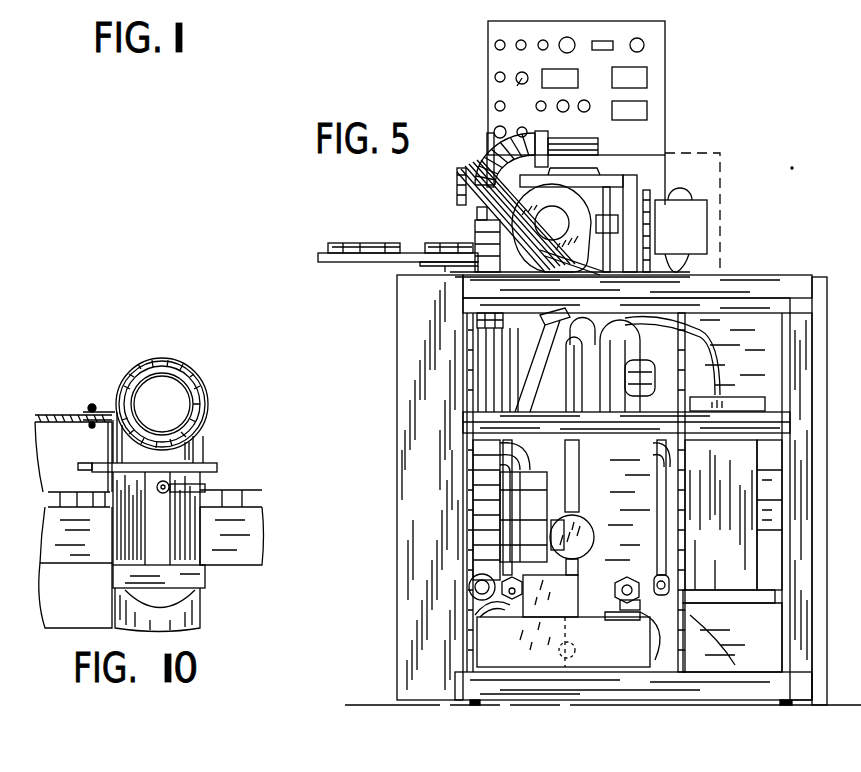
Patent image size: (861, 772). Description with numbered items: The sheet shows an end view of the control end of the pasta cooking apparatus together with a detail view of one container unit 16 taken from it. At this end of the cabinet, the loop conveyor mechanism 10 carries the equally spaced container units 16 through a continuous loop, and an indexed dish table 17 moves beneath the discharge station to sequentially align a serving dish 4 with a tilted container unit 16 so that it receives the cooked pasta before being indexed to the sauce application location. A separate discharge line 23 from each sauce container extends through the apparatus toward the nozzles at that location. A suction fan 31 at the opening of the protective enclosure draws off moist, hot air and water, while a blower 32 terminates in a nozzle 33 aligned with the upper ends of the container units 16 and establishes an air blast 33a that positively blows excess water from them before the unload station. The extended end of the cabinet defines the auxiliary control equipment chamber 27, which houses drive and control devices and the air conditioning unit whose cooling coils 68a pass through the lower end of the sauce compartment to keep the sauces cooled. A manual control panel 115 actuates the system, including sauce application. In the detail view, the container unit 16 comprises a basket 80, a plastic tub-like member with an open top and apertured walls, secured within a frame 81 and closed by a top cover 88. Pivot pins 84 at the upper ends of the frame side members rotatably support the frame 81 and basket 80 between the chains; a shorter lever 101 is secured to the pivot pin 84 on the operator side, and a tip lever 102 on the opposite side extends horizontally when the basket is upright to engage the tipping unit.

In FIG. 5, the manual control panel 115 is at (652, 78).
In FIG. 5, the loop conveyor mechanism 10 is at (605, 121).
In FIG. 5, the blower 32 is at (598, 148).
In FIG. 10, the blower 32 is at (172, 364).
In FIG. 5, the discharge line 23 is at (462, 202).
In FIG. 5, the suction fan 31 is at (532, 233).
In FIG. 5, the serving dish 4 is at (348, 241).
In FIG. 5, the indexed dish table 17 is at (372, 262).
In FIG. 5, the auxiliary control equipment chamber 27 is at (497, 528).
In FIG. 5, the cooling coils 68a is at (760, 550).
In FIG. 10, the nozzle 33 is at (198, 438).
In FIG. 10, the air blast 33a is at (203, 456).
In FIG. 10, the tip lever 102 is at (205, 487).
In FIG. 10, the pivot pin 84 is at (163, 493).
In FIG. 10, the shorter lever 101 is at (215, 512).
In FIG. 10, the frame 81 is at (167, 545).
In FIG. 10, the top cover 88 is at (100, 465).
In FIG. 10, the basket 80 is at (115, 545).
In FIG. 10, the container unit 16 is at (205, 573).